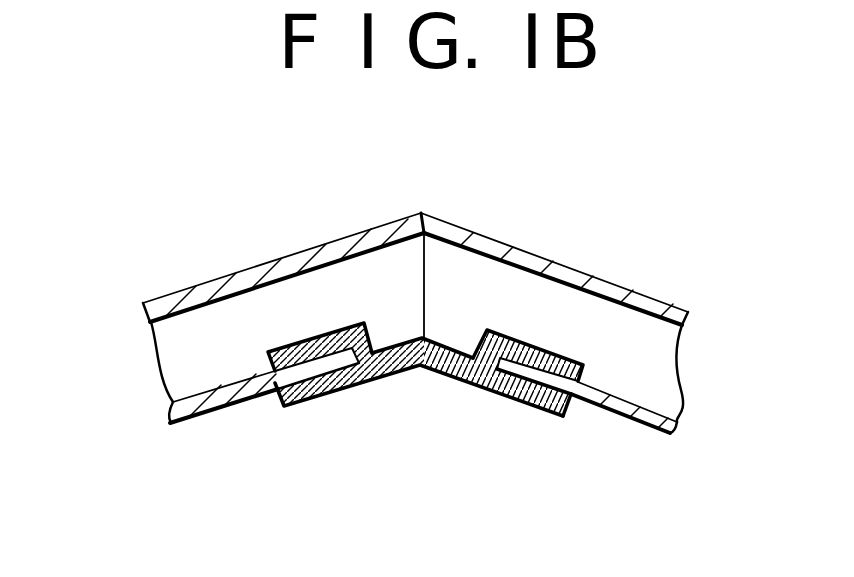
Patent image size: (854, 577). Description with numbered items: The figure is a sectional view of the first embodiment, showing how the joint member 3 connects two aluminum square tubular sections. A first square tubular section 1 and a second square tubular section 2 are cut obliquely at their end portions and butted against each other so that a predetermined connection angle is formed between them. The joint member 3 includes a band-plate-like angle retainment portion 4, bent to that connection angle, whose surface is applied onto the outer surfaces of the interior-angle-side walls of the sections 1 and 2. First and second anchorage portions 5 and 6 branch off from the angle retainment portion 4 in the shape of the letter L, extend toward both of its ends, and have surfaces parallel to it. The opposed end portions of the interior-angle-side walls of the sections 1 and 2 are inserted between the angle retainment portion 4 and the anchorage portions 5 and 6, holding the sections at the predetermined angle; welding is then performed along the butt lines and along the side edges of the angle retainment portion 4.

The first square tubular section 1 is at (224, 275).
The second square tubular section 2 is at (646, 292).
The joint member 3 is at (347, 412).
The angle retainment portion 4 is at (503, 394).
The first anchorage portion 5 is at (314, 332).
The second anchorage portion 6 is at (514, 342).